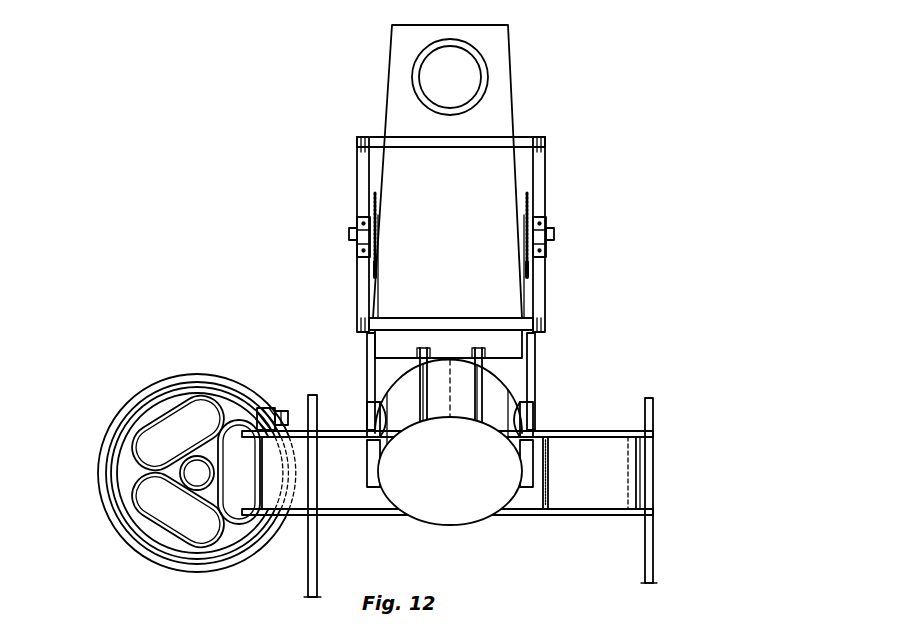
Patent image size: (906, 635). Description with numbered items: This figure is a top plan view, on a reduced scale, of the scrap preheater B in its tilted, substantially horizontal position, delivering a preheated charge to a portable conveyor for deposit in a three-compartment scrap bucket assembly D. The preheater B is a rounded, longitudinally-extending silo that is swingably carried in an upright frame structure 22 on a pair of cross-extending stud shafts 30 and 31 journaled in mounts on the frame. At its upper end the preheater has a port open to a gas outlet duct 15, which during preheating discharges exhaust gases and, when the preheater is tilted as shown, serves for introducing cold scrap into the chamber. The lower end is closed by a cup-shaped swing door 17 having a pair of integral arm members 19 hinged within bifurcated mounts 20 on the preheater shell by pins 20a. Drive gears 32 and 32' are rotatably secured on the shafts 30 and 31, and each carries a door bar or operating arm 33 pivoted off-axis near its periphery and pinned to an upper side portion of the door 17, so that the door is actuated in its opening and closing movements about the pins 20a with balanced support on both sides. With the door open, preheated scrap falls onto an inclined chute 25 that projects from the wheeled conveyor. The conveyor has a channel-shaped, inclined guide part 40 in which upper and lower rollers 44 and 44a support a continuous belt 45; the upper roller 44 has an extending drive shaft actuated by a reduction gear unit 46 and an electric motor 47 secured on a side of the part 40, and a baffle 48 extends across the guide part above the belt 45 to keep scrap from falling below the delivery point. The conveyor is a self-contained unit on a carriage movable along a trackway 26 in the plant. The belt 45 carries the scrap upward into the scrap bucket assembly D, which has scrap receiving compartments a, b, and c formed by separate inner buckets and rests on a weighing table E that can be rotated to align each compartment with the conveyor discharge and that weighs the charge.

The gas outlet duct 15 is at (473, 83).
The swing door 17 is at (462, 483).
The arm members 19 is at (477, 386).
The bifurcated mounts 20 is at (420, 352).
The pins 20a is at (436, 354).
The upright frame structure 22 is at (547, 172).
The inclined chute 25 is at (537, 382).
The trackway 26 is at (308, 575).
The stud shaft 30 is at (349, 234).
The stud shaft 31 is at (554, 234).
The drive gear 32 is at (348, 249).
The drive gear 32' is at (560, 253).
The door bar or operating arm 33 is at (359, 337).
The guide part 40 is at (604, 431).
The upper roller 44 is at (296, 485).
The lower roller 44a is at (640, 478).
The continuous belt 45 is at (593, 483).
The reduction gear unit 46 is at (268, 408).
The electric motor 47 is at (285, 410).
The baffle 48 is at (558, 452).
The scrap preheater B is at (462, 225).
The scrap bucket assembly D is at (118, 490).
The weighing table E is at (148, 560).
The scrap receiving compartment a is at (177, 510).
The scrap receiving compartment b is at (177, 433).
The scrap receiving compartment c is at (239, 472).